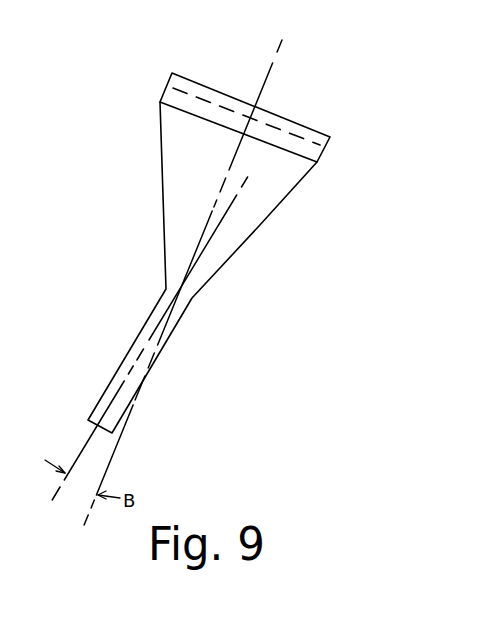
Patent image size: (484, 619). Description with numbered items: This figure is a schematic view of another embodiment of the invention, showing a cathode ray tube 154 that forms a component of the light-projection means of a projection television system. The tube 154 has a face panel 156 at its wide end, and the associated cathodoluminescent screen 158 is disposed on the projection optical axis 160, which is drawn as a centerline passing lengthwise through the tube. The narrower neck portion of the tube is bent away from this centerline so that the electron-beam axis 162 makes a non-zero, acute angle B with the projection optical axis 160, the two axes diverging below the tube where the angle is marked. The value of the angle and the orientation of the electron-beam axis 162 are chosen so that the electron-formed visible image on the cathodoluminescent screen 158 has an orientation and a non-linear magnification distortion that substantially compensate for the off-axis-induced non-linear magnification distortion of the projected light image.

The cathode ray tube 154 is at (148, 242).
The face panel 156 is at (222, 92).
The cathodoluminescent screen 158 is at (307, 140).
The projection optical axis 160 is at (270, 72).
The electron-beam axis 162 is at (88, 438).